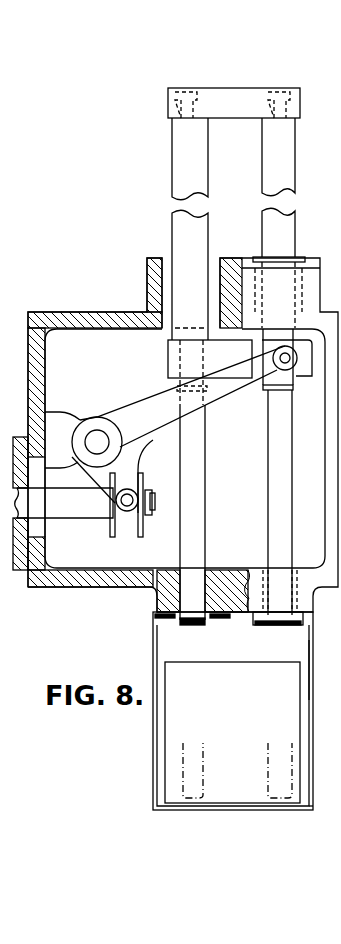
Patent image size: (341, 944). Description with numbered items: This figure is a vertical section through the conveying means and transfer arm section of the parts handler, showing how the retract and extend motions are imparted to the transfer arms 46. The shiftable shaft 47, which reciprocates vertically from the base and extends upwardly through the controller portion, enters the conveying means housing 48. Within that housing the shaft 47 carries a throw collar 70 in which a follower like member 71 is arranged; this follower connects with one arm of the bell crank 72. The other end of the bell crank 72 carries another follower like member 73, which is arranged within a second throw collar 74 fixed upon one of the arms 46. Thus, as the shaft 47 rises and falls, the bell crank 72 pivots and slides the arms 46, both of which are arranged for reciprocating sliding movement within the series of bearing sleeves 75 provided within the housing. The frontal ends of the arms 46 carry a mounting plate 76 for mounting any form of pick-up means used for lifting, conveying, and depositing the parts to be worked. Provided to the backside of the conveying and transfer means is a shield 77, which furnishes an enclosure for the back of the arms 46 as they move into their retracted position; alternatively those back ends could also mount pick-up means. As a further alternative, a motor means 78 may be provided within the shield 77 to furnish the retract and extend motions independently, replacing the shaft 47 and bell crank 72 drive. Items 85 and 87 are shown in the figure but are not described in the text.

The transfer arm 46 is at (172, 150).
The shiftable shaft 47 is at (56, 526).
The conveying means housing 48 is at (46, 588).
The throw collar 70 is at (132, 528).
The follower like member 71 is at (143, 520).
The bell crank 72 is at (148, 398).
The follower like member 73 is at (282, 363).
The throw collar 74 is at (302, 377).
The bearing sleeve 75 is at (262, 256).
The mounting plate 76 is at (226, 88).
The shield 77 is at (153, 728).
The motor means 78 is at (300, 745).
The wall 85 is at (325, 671).
The bottom wall 87 is at (325, 827).